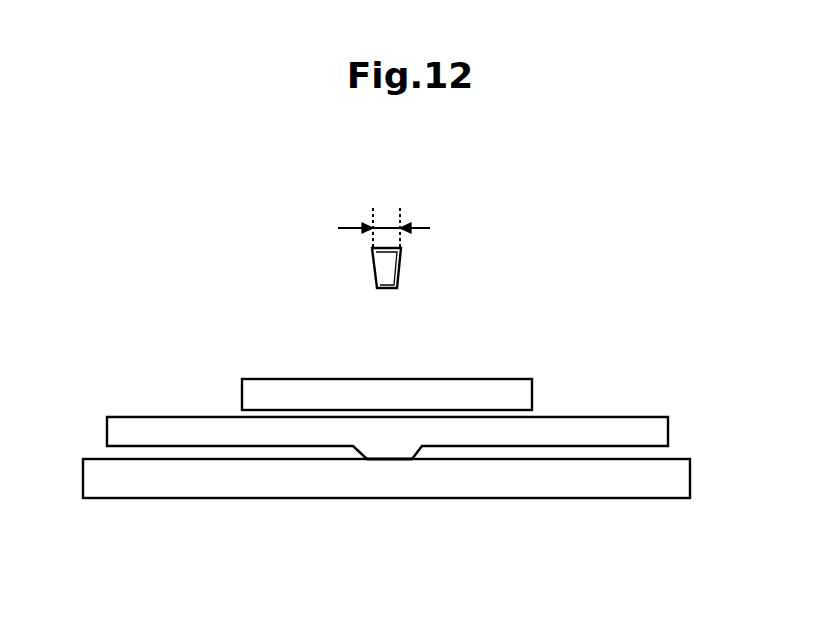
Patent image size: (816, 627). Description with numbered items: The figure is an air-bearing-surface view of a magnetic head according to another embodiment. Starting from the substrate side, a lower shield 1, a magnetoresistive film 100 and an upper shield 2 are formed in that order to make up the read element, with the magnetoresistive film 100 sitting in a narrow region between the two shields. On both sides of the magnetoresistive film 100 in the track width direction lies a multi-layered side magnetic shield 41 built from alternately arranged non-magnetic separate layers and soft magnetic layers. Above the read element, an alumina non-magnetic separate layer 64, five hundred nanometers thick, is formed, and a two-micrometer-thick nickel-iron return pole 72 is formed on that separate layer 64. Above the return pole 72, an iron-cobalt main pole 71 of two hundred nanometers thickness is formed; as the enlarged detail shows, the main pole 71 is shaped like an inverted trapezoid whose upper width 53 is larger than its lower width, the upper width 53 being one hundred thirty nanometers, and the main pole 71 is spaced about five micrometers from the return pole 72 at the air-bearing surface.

The lower shield 1 is at (515, 482).
The upper shield 2 is at (582, 429).
The multi-layered side magnetic shield 41 is at (238, 450).
The upper width 53 is at (384, 214).
The non-magnetic separate layer 64 is at (378, 417).
The main pole 71 is at (387, 277).
The return pole 72 is at (448, 395).
The magnetoresistive film 100 is at (397, 459).